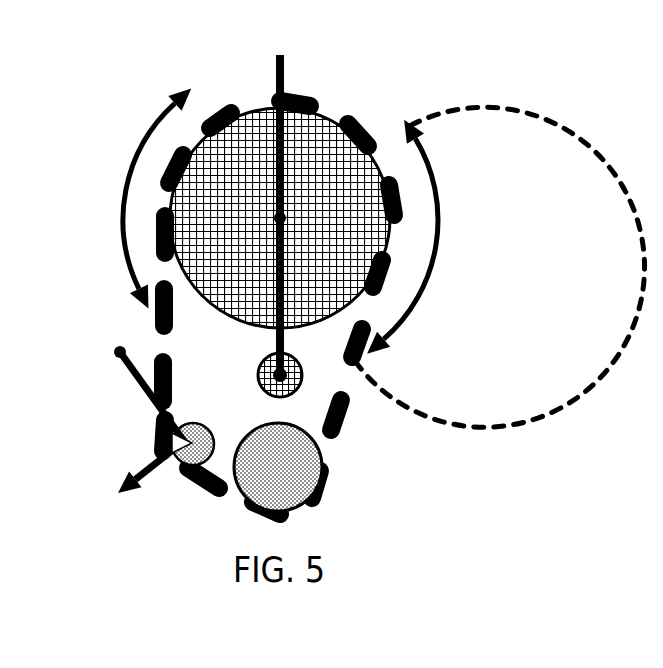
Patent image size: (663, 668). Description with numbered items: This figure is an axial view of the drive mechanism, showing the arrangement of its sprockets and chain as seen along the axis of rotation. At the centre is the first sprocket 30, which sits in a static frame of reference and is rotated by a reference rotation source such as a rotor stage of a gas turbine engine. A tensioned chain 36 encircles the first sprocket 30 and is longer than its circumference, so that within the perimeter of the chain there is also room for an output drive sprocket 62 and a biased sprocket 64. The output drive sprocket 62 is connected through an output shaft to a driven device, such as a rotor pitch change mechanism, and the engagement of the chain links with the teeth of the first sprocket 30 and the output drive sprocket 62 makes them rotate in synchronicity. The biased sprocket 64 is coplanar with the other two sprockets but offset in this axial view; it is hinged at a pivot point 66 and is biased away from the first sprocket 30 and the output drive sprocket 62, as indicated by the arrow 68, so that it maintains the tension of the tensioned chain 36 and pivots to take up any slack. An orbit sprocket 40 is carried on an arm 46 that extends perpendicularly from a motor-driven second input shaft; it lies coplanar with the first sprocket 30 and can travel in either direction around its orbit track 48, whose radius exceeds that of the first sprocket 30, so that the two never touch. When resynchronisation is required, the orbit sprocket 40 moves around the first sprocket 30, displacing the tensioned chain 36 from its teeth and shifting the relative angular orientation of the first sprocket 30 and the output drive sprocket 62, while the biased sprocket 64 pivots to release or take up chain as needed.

The first sprocket 30 is at (237, 158).
The tensioned chain 36 is at (292, 96).
The orbit sprocket 40 is at (300, 382).
The arm 46 is at (284, 343).
The orbit track 48 is at (250, 58).
The output drive sprocket 62 is at (272, 475).
The biased sprocket 64 is at (170, 472).
The pivot point 66 is at (116, 355).
The arrow 68 is at (152, 461).